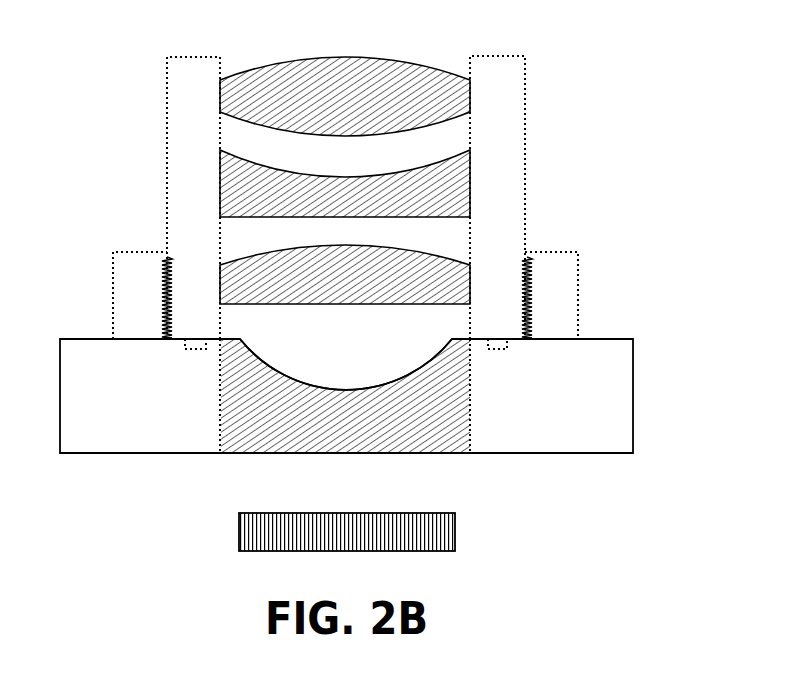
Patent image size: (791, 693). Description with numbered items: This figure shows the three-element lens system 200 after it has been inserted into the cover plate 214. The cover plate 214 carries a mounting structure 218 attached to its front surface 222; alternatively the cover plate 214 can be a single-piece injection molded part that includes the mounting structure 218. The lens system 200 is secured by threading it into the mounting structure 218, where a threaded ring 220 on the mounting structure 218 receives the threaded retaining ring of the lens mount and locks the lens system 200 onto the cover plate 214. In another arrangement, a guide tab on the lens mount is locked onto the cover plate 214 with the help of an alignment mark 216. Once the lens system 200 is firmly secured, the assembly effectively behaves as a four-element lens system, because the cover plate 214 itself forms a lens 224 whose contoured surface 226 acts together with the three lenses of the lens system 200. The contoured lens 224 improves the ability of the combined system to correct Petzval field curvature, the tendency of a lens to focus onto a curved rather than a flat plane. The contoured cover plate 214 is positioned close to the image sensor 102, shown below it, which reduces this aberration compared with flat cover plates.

The lens system 200 is at (448, 48).
The cover plate 214 is at (392, 387).
The alignment mark 216 is at (500, 350).
The mounting structure 218 is at (560, 250).
The threaded ring 220 is at (530, 322).
The front surface 222 is at (585, 328).
The lens 224 is at (220, 425).
The contoured surface 226 is at (278, 372).
The image sensor 102 is at (456, 530).